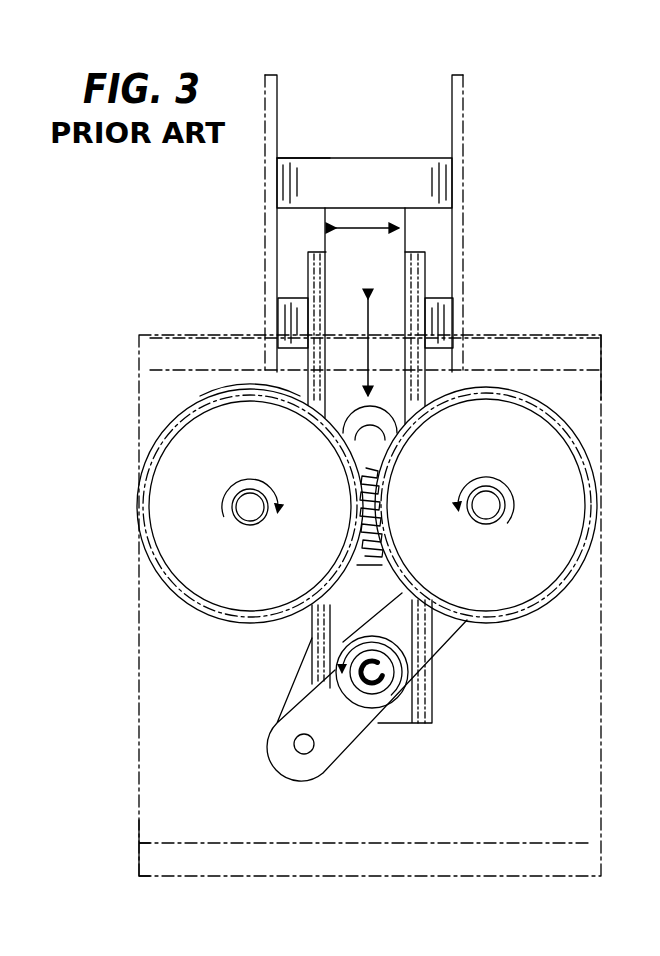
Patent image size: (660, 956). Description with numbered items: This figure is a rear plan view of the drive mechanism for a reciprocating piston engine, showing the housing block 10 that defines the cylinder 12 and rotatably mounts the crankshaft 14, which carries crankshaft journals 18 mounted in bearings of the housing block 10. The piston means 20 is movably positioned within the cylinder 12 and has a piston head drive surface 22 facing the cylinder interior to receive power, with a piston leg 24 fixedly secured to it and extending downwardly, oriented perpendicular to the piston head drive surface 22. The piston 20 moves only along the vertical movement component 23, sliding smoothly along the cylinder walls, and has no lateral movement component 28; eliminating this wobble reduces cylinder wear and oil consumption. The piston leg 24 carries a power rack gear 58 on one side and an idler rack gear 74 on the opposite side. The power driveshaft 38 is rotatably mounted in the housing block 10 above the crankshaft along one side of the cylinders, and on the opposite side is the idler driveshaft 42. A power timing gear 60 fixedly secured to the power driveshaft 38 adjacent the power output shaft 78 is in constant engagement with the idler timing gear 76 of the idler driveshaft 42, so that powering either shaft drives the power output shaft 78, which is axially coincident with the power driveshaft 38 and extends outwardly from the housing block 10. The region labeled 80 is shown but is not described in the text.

The housing block 10 is at (601, 400).
The cylinder 12 is at (465, 152).
The crankshaft 14 is at (377, 672).
The crankshaft journal 18 is at (277, 723).
The piston means 20 is at (377, 194).
The piston head drive surface 22 is at (318, 158).
The vertical movement component 23 is at (370, 332).
The piston leg 24 is at (379, 276).
The lateral movement component 28 is at (372, 227).
The power driveshaft 38 is at (482, 513).
The idler driveshaft 42 is at (254, 514).
The power rack gear 58 is at (427, 363).
The power timing gear 60 is at (516, 505).
The idler rack gear 74 is at (280, 380).
The idler timing gear 76 is at (224, 448).
The power output shaft 78 is at (490, 499).
The upper space 80 is at (404, 139).